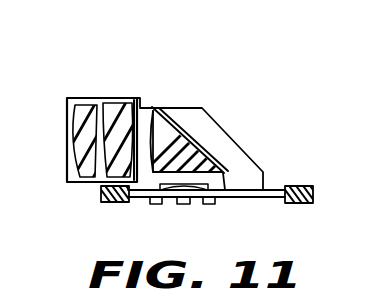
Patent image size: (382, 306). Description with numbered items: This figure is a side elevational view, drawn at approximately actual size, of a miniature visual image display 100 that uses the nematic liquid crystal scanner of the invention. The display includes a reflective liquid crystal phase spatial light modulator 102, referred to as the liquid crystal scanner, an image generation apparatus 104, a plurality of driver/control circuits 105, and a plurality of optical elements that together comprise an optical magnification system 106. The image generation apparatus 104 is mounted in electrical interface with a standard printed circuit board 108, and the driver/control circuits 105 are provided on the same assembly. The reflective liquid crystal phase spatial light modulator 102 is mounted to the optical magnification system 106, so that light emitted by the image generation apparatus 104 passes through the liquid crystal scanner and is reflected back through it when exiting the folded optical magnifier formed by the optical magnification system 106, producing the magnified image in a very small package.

The miniature visual image display 100 is at (270, 78).
The reflective liquid crystal phase spatial light modulator 102 is at (181, 108).
The image generation apparatus 104 is at (182, 204).
The driver/control circuits 105 is at (157, 204).
The optical magnification system 106 is at (92, 83).
The printed circuit board 108 is at (281, 186).